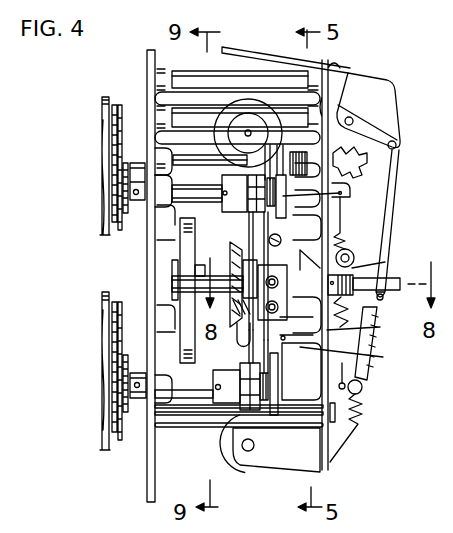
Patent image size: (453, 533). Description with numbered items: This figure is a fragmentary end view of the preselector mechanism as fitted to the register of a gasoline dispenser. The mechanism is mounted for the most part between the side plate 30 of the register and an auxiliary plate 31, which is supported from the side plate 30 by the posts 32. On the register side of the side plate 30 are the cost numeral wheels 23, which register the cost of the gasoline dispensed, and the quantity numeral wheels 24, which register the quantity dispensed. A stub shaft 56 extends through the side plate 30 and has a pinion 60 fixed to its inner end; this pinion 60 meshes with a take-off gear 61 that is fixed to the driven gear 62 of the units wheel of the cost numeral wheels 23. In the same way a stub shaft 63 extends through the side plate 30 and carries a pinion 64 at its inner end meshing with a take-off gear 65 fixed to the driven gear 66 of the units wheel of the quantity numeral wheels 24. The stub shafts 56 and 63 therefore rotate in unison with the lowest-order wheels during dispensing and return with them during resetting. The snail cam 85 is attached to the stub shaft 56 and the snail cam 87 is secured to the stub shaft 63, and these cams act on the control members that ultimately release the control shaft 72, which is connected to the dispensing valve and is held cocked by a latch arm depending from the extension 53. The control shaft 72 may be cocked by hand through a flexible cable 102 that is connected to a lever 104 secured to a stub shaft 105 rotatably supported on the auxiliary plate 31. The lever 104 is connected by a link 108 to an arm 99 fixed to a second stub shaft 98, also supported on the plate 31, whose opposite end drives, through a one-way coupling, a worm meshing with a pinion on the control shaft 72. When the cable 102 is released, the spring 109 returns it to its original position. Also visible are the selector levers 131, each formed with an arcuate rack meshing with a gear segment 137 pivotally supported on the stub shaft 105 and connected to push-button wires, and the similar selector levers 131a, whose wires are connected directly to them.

The cost numeral wheels 23 is at (104, 122).
The quantity numeral wheels 24 is at (104, 302).
The side plate 30 is at (147, 499).
The auxiliary plate 31 is at (330, 460).
The posts 32 is at (177, 70).
The extension 53 is at (176, 160).
The stub shaft 56 is at (184, 192).
The pinion 60 is at (127, 215).
The take-off gear 61 is at (126, 163).
The driven gear 62 is at (115, 104).
The stub shaft 63 is at (186, 400).
The pinion 64 is at (127, 412).
The take-off gear 65 is at (126, 355).
The driven gear 66 is at (116, 302).
The control shaft 72 is at (395, 278).
The snail cam 85 is at (342, 193).
The snail cam 87 is at (276, 412).
The second stub shaft 98 is at (350, 248).
The arm 99 is at (360, 262).
The flexible cable 102 is at (373, 56).
The lever 104 is at (392, 102).
The stub shaft 105 is at (352, 120).
The link 108 is at (414, 138).
The spring 109 is at (358, 412).
The selector levers 131 is at (350, 178).
The selector levers 131a is at (368, 352).
The gear segment 137 is at (350, 147).